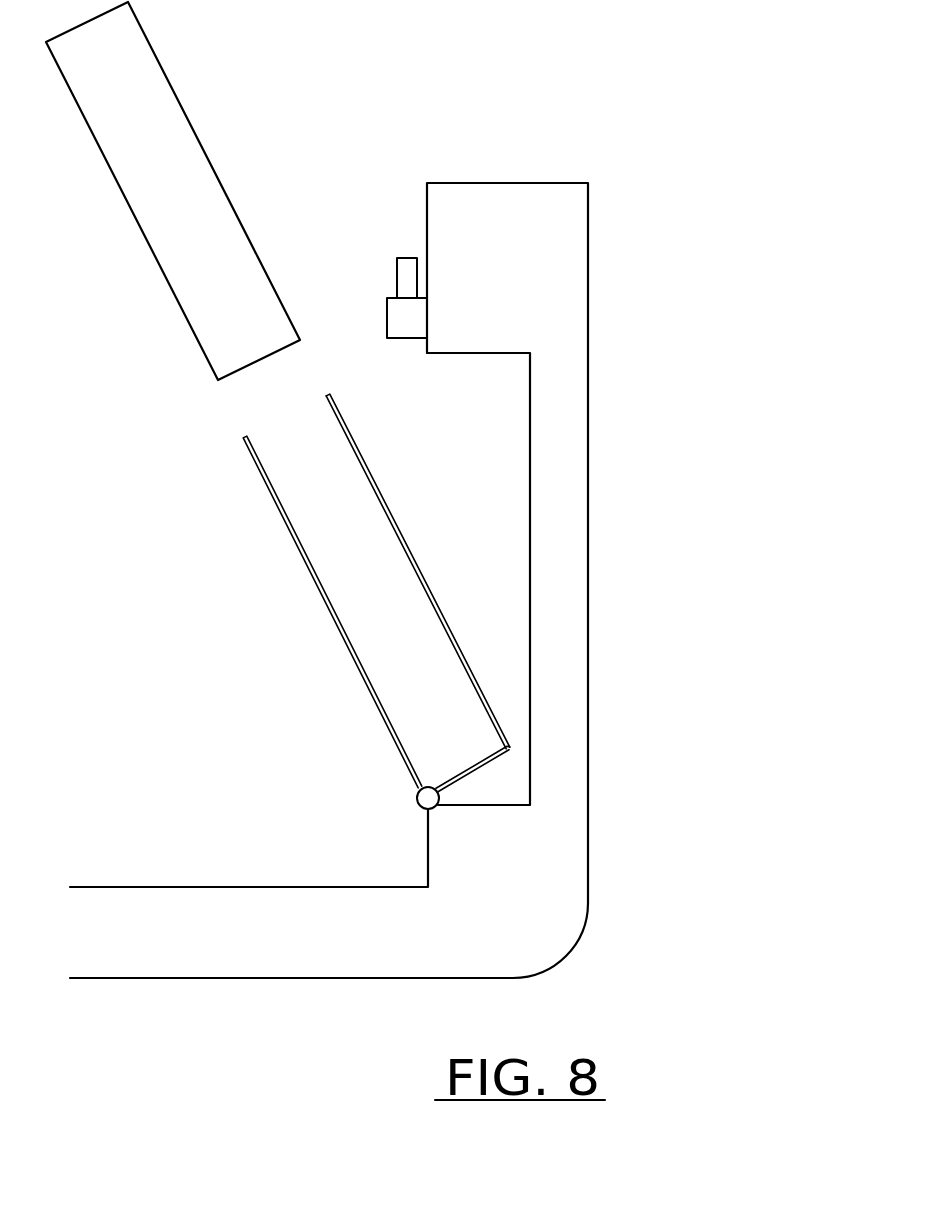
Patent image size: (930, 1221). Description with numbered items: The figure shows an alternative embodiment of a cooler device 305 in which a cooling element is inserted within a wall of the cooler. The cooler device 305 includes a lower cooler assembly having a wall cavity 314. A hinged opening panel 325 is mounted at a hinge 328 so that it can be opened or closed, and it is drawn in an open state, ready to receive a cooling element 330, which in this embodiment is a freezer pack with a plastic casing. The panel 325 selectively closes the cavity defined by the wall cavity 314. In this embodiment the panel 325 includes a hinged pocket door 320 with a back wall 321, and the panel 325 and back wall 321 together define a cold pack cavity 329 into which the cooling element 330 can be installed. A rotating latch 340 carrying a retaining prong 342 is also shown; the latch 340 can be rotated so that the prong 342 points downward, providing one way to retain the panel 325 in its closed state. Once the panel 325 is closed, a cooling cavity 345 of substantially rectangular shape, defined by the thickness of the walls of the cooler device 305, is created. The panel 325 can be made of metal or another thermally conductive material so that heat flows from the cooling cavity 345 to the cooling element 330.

The cooler device 305 is at (550, 135).
The wall cavity 314 is at (482, 482).
The hinged pocket door 320 is at (408, 600).
The back wall 321 is at (468, 667).
The hinged opening panel 325 is at (378, 702).
The hinge 328 is at (437, 806).
The cold pack cavity 329 is at (447, 735).
The cooling element 330 is at (195, 131).
The rotating latch 340 is at (414, 317).
The retaining prong 342 is at (422, 267).
The cooling cavity 345 is at (135, 695).